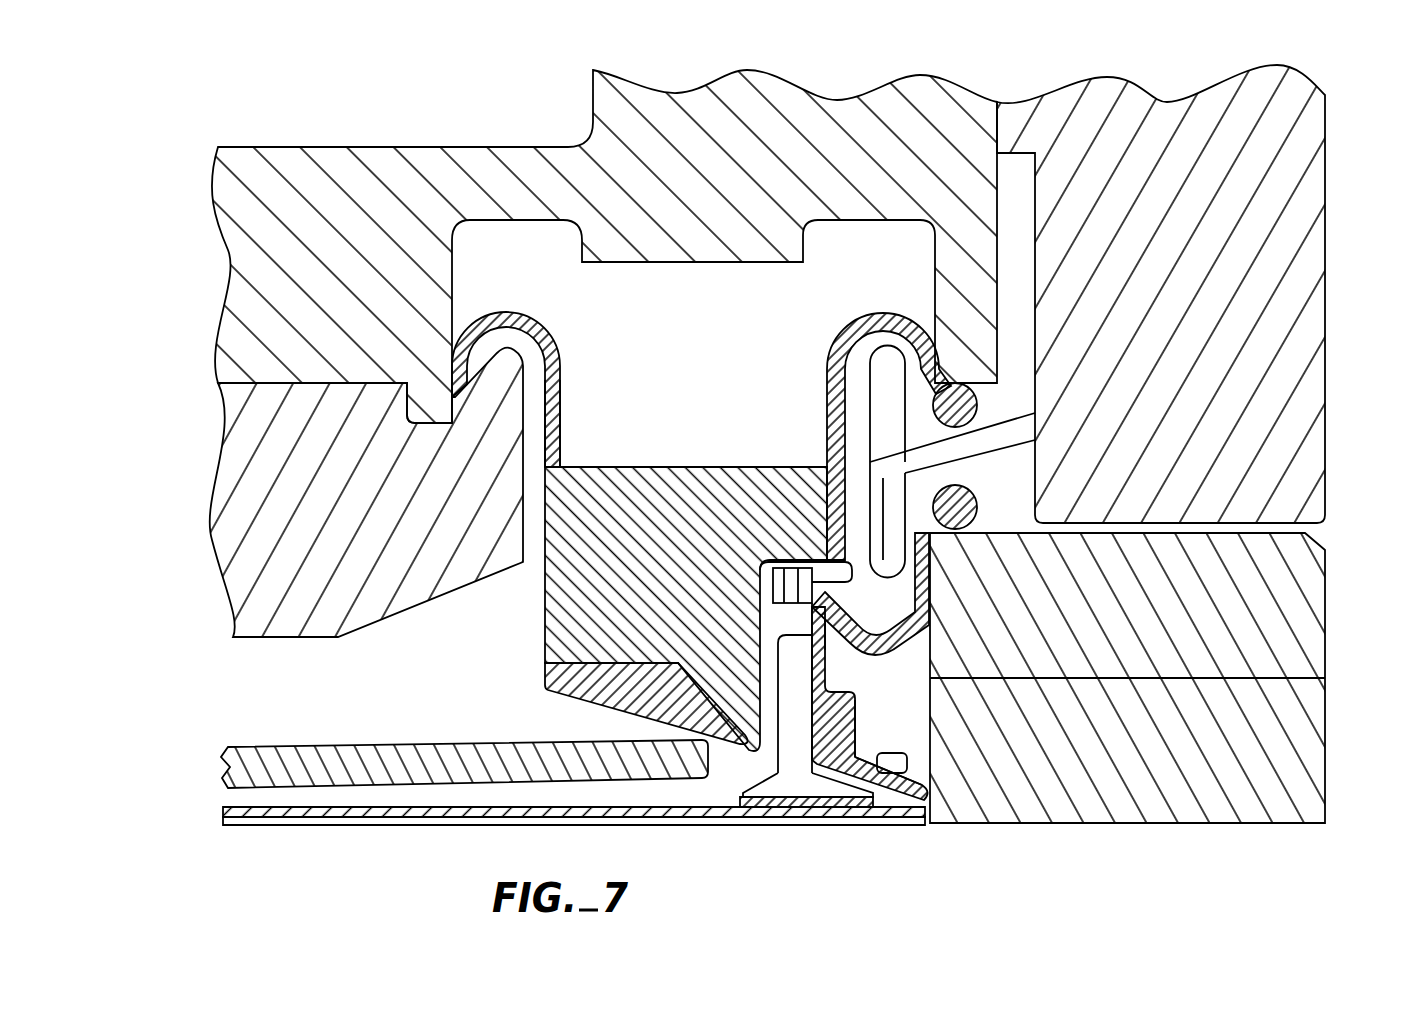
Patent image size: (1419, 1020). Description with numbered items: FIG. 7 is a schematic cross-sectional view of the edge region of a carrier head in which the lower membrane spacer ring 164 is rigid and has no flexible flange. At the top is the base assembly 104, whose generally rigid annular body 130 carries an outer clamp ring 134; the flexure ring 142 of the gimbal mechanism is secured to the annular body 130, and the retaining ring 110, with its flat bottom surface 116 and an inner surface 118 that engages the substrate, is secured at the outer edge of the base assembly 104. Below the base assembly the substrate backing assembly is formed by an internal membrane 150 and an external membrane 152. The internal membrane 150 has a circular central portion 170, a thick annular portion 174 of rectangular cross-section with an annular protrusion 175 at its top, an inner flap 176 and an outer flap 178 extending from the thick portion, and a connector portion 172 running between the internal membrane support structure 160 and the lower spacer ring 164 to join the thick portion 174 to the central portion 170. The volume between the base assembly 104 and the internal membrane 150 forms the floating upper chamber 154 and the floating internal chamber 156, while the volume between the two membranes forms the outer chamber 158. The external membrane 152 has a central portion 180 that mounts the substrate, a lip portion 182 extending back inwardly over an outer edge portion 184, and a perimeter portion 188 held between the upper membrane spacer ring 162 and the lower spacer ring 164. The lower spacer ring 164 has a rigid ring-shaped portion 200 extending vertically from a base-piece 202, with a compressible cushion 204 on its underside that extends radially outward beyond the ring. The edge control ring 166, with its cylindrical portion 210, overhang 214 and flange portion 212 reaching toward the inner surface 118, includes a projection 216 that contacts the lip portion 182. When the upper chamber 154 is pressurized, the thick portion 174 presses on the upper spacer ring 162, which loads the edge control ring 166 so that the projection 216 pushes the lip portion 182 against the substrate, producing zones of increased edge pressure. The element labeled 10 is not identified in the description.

The annular body 130 is at (430, 147).
The base assembly 104 is at (1328, 180).
The outer clamp ring 134 is at (1320, 330).
The annular outer flap 178 is at (893, 322).
The annular inner flap 176 is at (560, 372).
The floating upper chamber 154 is at (694, 379).
The annular protrusion 175 is at (572, 470).
The ring-shaped portion 200 is at (770, 636).
The upper membrane spacer ring 162 is at (808, 560).
The flexure ring 142 is at (303, 640).
The thick annular portion 174 is at (548, 605).
The floating internal chamber 156 is at (362, 694).
The internal membrane support structure 160 is at (530, 678).
The perimeter portion 188 is at (847, 606).
The cylindrical portion 210 is at (833, 628).
The edge control ring 166 is at (857, 697).
The overhang 214 is at (838, 700).
The flange portion 212 is at (868, 752).
The circular central portion 170 is at (318, 752).
The internal membrane 150 is at (214, 760).
The external membrane 152 is at (214, 815).
The annular connector portion 172 is at (714, 760).
The central portion 180 is at (305, 812).
The outer chamber 158 is at (393, 797).
The substrate 10 is at (484, 822).
The lower membrane spacer ring 164 is at (728, 789).
The compressible cushion 204 is at (757, 800).
The base-piece 202 is at (800, 792).
The lip portion 182 is at (837, 807).
The outer edge portion 184 is at (900, 826).
The inner surface 118 is at (930, 792).
The projection 216 is at (905, 765).
The bottom surface 116 is at (1125, 825).
The retaining ring 110 is at (1340, 755).